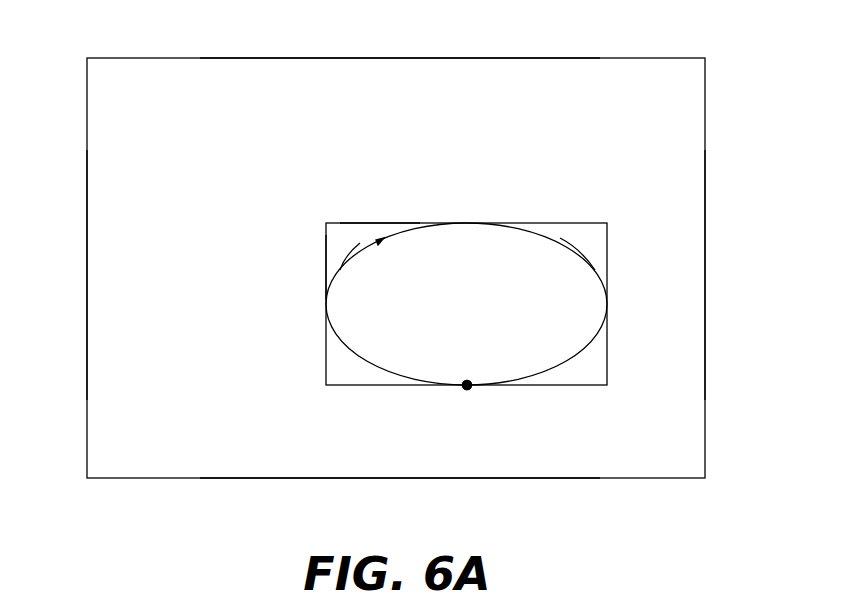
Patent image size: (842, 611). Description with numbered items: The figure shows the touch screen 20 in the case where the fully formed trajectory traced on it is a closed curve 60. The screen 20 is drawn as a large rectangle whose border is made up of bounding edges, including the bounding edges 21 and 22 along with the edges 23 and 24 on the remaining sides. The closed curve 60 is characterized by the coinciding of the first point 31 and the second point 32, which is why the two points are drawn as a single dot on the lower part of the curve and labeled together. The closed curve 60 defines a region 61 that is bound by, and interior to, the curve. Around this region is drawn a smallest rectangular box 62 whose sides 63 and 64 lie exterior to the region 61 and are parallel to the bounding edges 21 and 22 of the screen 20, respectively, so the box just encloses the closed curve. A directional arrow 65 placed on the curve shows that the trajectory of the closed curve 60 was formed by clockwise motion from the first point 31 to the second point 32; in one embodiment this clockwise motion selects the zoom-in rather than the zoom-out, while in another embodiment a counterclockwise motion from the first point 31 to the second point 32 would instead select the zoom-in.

The touch screen 20 is at (658, 99).
The bounding edge 21 is at (182, 478).
The bounding edge 22 is at (87, 268).
The top edge 23 is at (397, 58).
The right edge 24 is at (705, 266).
The first point 31 is at (465, 392).
The second point 32 is at (467, 385).
The closed curve 60 is at (575, 250).
The region 61 is at (478, 308).
The smallest rectangular box 62 is at (571, 213).
The side 63 is at (357, 222).
The side 64 is at (326, 258).
The directional arrow 65 is at (356, 252).